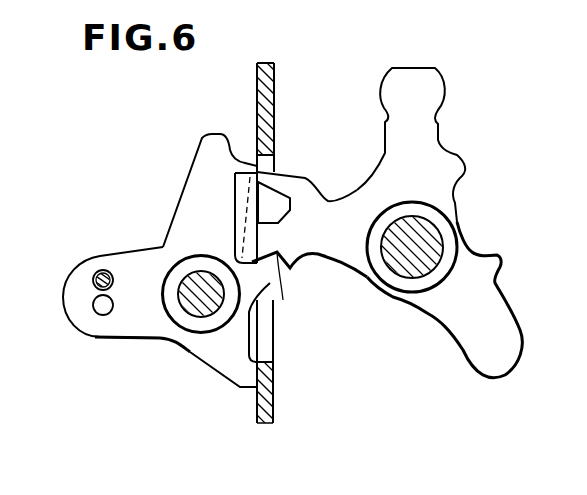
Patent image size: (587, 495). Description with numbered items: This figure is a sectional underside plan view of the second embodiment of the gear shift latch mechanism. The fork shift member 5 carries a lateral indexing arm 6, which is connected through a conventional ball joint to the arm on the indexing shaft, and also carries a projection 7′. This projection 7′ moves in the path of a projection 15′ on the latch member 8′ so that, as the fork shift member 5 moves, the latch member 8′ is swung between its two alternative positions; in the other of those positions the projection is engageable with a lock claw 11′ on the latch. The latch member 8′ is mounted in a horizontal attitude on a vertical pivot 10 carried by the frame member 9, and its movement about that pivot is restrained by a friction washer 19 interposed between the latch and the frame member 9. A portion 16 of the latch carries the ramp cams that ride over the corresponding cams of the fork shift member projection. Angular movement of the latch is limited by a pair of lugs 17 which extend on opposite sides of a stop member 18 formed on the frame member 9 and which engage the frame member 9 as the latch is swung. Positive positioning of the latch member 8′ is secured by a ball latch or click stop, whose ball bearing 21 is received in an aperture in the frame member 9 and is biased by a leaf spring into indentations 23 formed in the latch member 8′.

The fork shift member 5 is at (387, 293).
The lateral indexing arm 6 is at (344, 253).
The projection 7′ is at (278, 200).
The latch member 8′ is at (165, 250).
The frame member 9 is at (279, 83).
The vertical pivot 10 is at (203, 312).
The lock claw 11′ is at (251, 168).
The projection 15′ is at (283, 291).
The portion 16 is at (262, 240).
The lugs 17 is at (208, 147).
The stop member 18 is at (271, 114).
The friction washer 19 is at (175, 316).
The ball bearing 21 is at (102, 269).
The indentations 23 is at (93, 309).